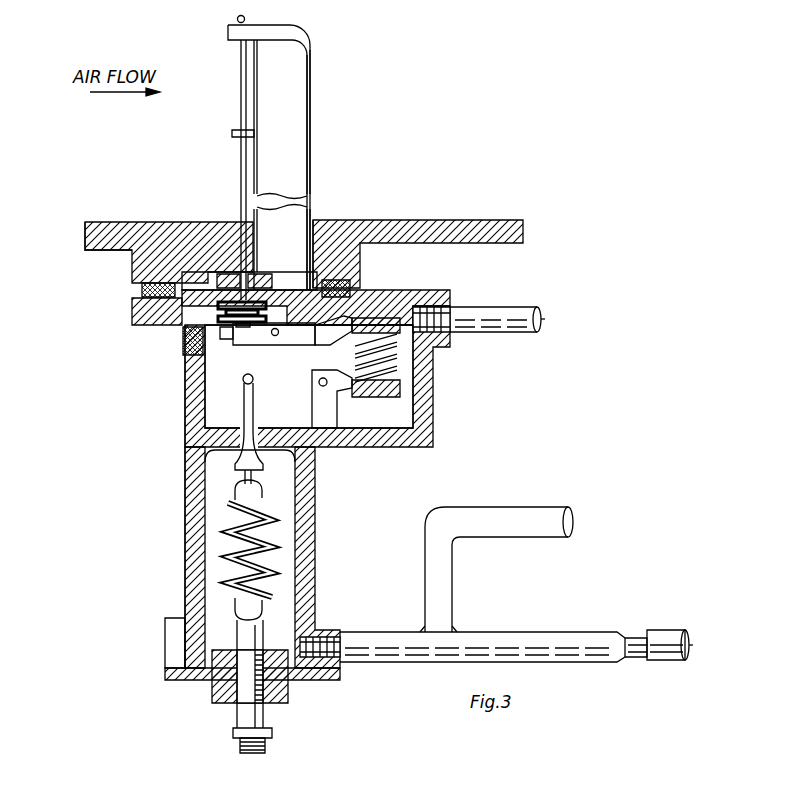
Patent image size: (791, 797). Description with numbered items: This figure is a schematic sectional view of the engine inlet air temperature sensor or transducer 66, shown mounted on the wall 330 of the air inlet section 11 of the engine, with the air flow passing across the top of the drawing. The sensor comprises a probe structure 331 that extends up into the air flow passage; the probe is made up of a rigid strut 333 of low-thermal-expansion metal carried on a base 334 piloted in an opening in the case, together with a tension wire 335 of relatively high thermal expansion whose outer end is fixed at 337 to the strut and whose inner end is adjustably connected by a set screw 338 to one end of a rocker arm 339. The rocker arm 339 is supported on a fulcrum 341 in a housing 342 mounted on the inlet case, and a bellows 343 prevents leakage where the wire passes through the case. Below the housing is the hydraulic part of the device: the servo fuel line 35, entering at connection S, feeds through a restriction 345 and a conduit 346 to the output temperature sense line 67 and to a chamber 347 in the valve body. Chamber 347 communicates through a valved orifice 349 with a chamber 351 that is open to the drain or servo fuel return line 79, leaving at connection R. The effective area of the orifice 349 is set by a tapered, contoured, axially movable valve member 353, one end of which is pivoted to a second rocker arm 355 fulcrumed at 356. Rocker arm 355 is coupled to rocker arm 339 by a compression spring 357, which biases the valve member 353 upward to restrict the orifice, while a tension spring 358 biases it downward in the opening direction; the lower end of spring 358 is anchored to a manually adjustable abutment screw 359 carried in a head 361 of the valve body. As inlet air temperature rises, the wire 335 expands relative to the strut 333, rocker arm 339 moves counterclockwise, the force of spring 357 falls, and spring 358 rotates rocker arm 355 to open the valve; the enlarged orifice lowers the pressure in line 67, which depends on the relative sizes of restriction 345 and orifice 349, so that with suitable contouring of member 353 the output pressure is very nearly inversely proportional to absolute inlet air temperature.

The air inlet section 11 is at (80, 237).
The wall 330 is at (445, 222).
The probe structure 331 is at (318, 131).
The rigid strut 333 is at (295, 77).
The base 334 is at (318, 245).
The tension wire 335 is at (241, 113).
The fixing point of wire to strut 337 is at (237, 19).
The set screw 338 is at (195, 345).
The rocker arm 339 is at (336, 338).
The fulcrum 341 is at (267, 349).
The housing 342 is at (380, 298).
The bellows 343 is at (218, 328).
The restriction 345 is at (632, 638).
The conduit 346 is at (496, 634).
The chamber 347 is at (285, 506).
The valved orifice 349 is at (300, 452).
The chamber 351 is at (410, 411).
The valve member 353 is at (243, 458).
The rocker arm 355 is at (300, 382).
The fulcrum 356 is at (326, 387).
The compression spring 357 is at (397, 374).
The tension spring 358 is at (226, 543).
The abutment screw 359 is at (272, 747).
The head 361 is at (192, 676).
The inlet temperature sensor 66 is at (176, 503).
The temperature sense line 67 is at (526, 520).
The servo fuel return line 79 is at (509, 320).
The servo fuel line 35 is at (670, 636).
The connection R is at (541, 319).
The connection S is at (689, 645).